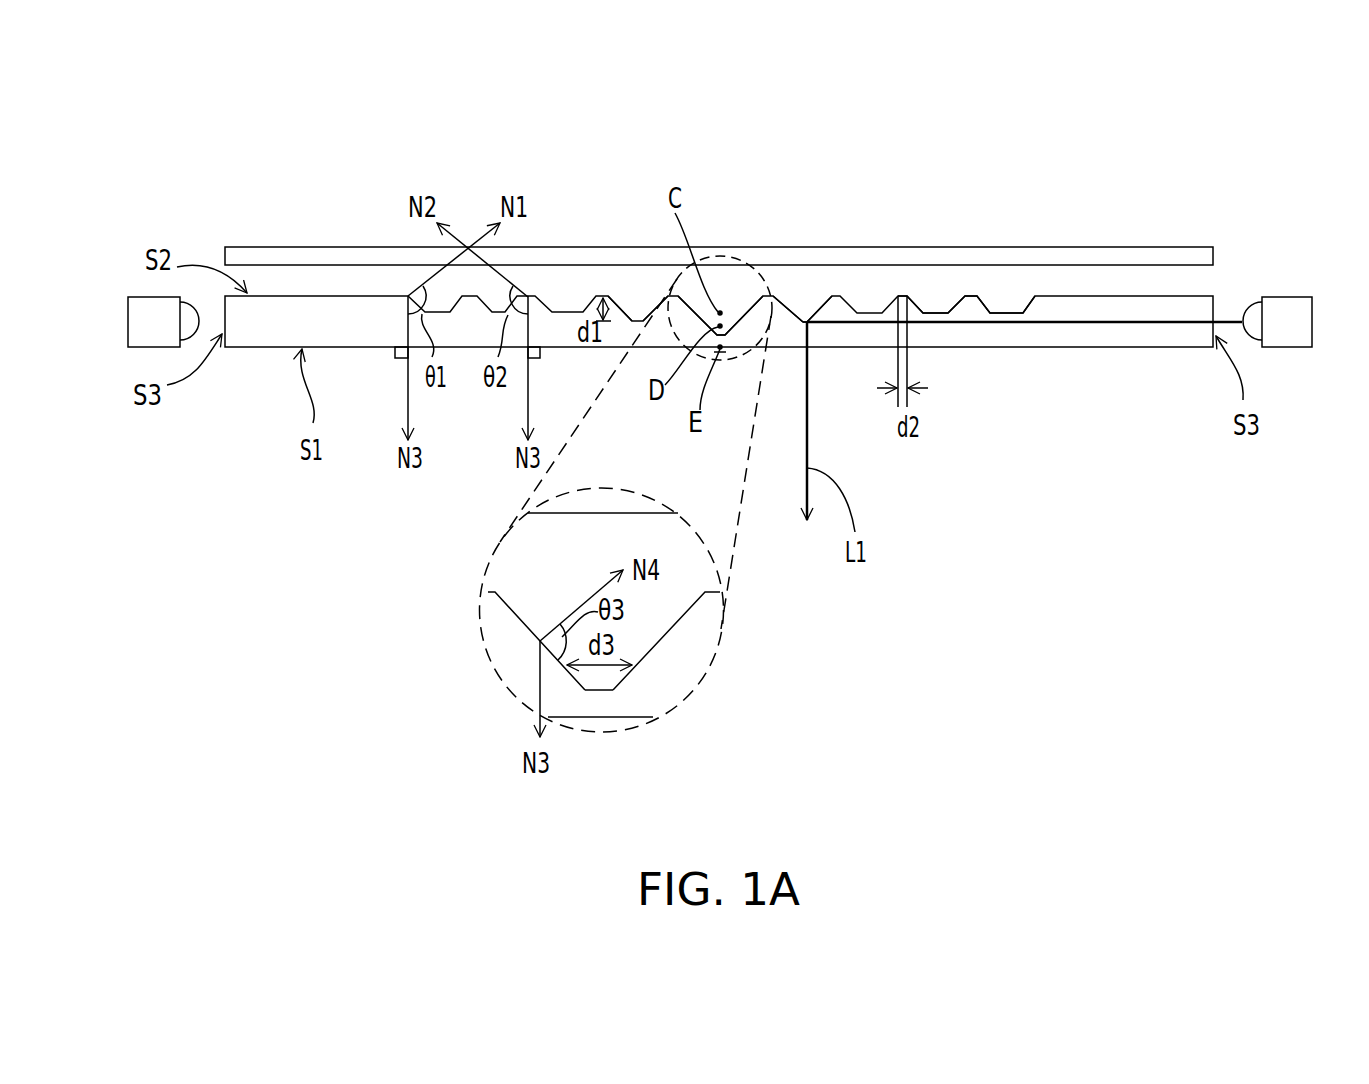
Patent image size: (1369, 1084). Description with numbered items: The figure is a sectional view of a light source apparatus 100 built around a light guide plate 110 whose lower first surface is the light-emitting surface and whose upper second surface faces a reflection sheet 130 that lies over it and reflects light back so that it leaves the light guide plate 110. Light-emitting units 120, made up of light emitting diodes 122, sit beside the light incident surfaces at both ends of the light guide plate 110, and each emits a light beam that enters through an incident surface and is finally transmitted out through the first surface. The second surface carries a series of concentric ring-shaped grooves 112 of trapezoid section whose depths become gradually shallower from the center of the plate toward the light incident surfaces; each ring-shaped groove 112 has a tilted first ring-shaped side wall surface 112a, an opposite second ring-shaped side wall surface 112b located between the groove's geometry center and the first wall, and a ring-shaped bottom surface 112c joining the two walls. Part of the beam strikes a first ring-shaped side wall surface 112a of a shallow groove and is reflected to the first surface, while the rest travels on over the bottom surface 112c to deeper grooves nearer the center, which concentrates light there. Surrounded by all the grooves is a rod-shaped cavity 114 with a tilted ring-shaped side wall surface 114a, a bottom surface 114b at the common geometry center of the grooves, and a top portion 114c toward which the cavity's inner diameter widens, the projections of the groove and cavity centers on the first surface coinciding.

The light source apparatus 100 is at (1192, 717).
The light guide plate 110 is at (1127, 342).
The ring-shaped groove 112 is at (932, 300).
The first ring-shaped side wall surface 112a is at (620, 305).
The second ring-shaped side wall surface 112b is at (657, 304).
The ring-shaped bottom surface 112c is at (800, 328).
The cavity 114 is at (737, 302).
The ring-shaped side wall surface 114a is at (510, 605).
The bottom surface 114b is at (594, 695).
The top portion 114c is at (670, 588).
The light-emitting unit 120 is at (128, 322).
The light emitting diode 122 is at (1241, 304).
The reflection sheet 130 is at (1168, 255).